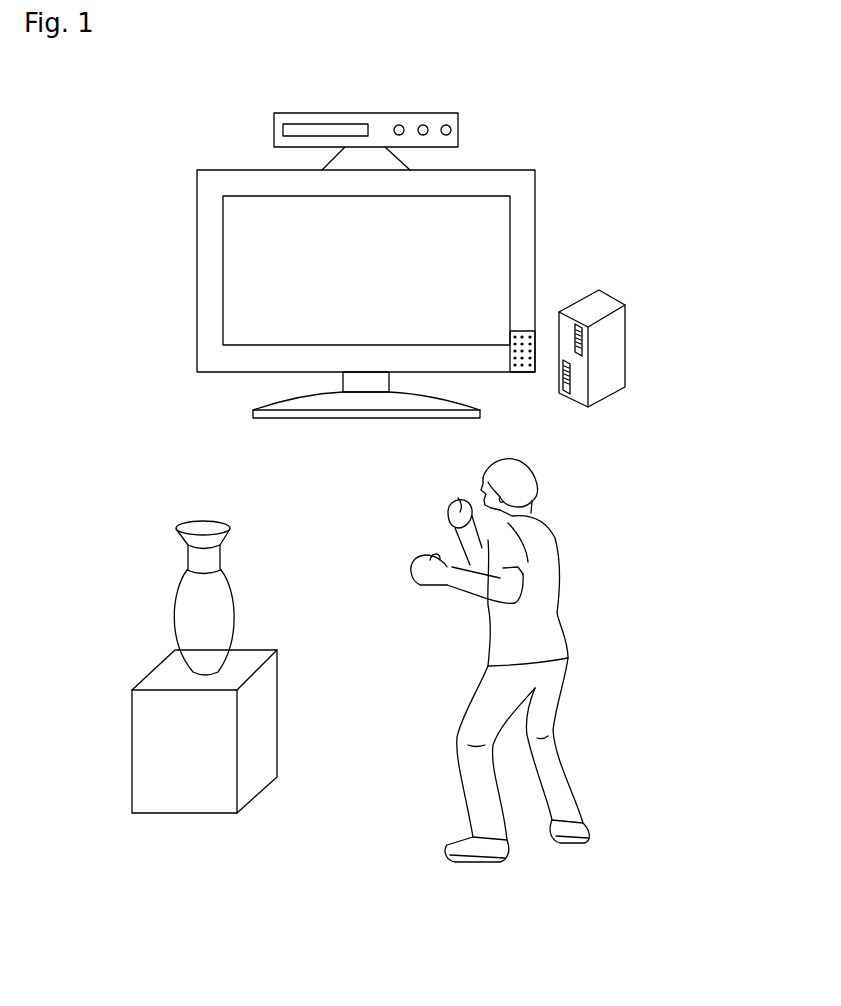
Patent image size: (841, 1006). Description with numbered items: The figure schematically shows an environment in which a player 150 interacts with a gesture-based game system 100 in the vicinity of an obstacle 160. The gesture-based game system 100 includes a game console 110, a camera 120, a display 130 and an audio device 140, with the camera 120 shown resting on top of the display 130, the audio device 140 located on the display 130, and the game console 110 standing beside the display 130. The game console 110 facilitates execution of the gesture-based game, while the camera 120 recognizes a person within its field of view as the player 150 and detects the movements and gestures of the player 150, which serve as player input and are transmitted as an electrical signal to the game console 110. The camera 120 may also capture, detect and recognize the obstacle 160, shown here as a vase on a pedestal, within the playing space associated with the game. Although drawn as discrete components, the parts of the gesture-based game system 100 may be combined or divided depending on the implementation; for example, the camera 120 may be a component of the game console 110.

The gesture-based game system 100 is at (696, 382).
The game console 110 is at (605, 293).
The camera 120 is at (427, 112).
The display 130 is at (503, 170).
The audio device 140 is at (526, 373).
The player 150 is at (596, 628).
The obstacle 160 is at (112, 651).